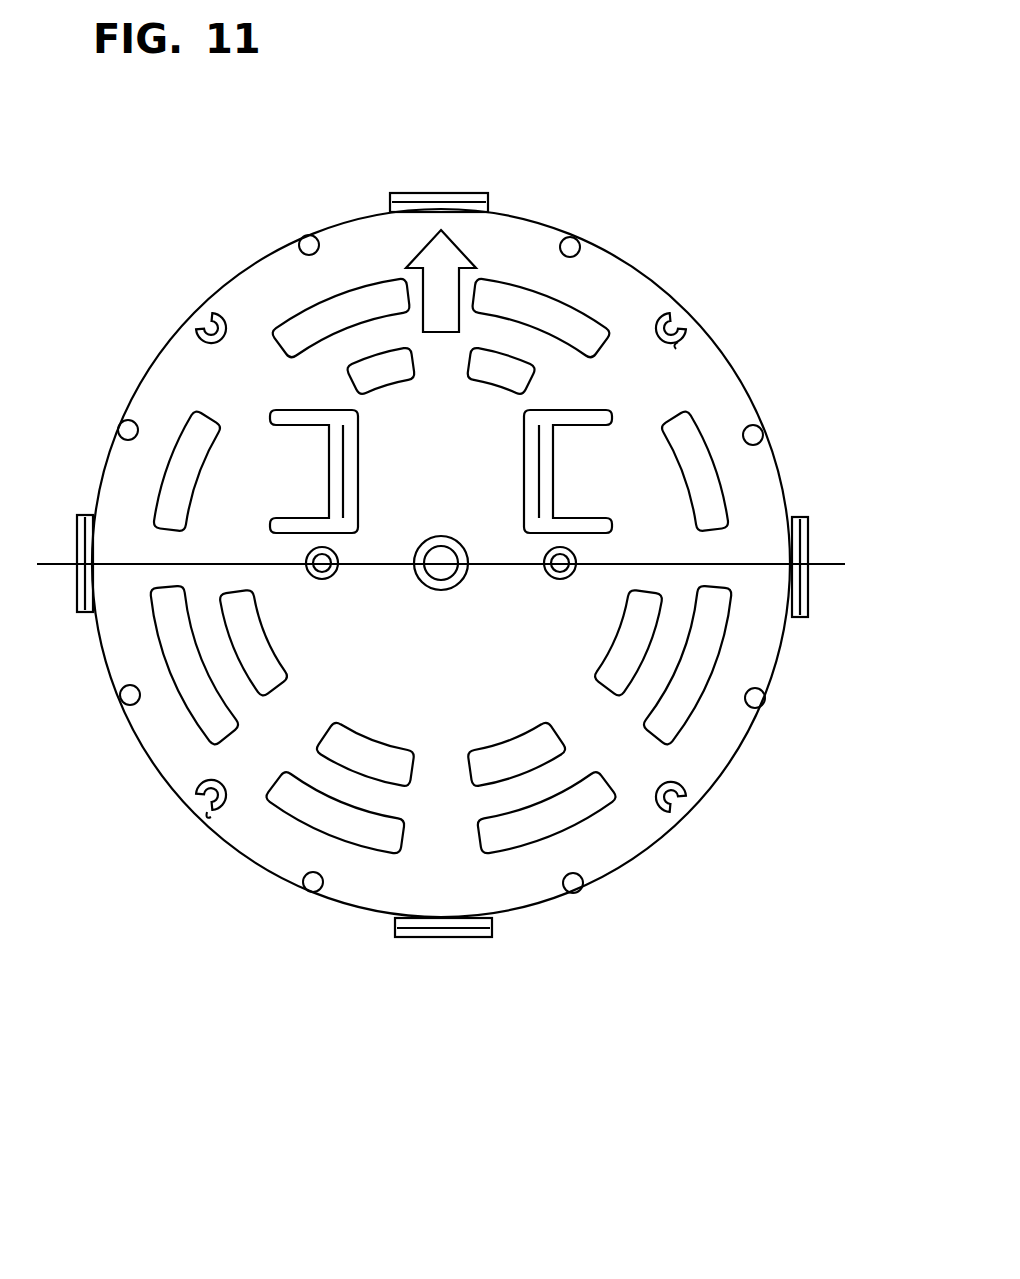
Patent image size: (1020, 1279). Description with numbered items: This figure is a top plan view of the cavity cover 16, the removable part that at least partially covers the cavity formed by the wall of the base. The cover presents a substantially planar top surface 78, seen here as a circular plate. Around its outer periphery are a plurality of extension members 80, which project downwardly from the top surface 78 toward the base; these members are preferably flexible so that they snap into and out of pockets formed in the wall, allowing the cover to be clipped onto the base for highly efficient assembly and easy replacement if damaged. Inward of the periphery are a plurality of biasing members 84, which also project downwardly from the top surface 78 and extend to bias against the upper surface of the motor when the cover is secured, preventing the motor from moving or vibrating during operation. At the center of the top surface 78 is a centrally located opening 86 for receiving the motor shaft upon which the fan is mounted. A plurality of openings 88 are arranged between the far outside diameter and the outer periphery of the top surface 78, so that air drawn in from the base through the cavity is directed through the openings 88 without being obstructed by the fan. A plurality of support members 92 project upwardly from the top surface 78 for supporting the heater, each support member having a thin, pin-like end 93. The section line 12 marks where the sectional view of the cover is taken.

The section line 12 is at (51, 566).
The cavity cover 16 is at (282, 1065).
The top surface 78 is at (155, 398).
The extension members 80 is at (432, 193).
The biasing members 84 is at (523, 460).
The centrally located opening 86 is at (441, 592).
The openings 88 is at (513, 762).
The support members 92 is at (696, 344).
The pin-like end 93 is at (207, 328).